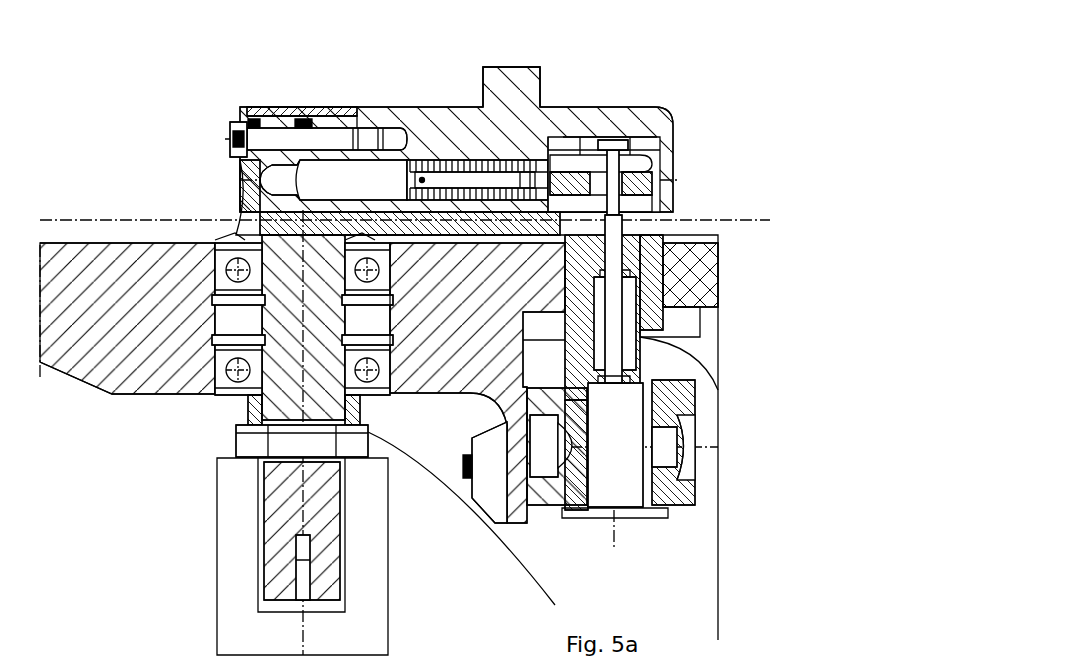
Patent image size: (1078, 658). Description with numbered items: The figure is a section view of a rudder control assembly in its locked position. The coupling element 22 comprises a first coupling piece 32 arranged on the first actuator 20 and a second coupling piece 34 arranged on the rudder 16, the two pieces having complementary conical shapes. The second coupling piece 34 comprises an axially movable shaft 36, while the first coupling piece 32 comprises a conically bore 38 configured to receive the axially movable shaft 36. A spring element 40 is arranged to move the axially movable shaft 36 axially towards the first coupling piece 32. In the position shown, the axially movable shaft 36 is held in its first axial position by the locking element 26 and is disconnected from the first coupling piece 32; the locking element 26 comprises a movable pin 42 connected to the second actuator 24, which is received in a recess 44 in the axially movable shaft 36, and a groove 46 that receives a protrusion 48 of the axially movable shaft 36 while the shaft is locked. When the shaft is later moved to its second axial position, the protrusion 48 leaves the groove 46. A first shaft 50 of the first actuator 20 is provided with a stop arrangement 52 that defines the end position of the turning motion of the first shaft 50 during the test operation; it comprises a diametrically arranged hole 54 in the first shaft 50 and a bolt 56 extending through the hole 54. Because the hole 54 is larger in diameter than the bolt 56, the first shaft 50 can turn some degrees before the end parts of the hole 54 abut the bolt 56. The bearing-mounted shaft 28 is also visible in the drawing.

The rudder 16 is at (515, 68).
The first actuator 20 is at (217, 552).
The coupling element 22 is at (224, 128).
The second actuator 24 is at (700, 402).
The locking element 26 is at (690, 235).
The shaft 28 is at (300, 336).
The first coupling piece 32 is at (250, 208).
The second coupling piece 34 is at (422, 135).
The axially movable shaft 36 is at (386, 165).
The conically bore 38 is at (255, 140).
The spring element 40 is at (505, 165).
The movable pin 42 is at (660, 292).
The recess 44 is at (600, 235).
The groove 46 is at (628, 250).
The protrusion 48 is at (650, 228).
The first shaft 50 is at (340, 318).
The stop arrangement 52 is at (328, 112).
The diametrically arranged hole 54 is at (254, 118).
The bolt 56 is at (303, 118).